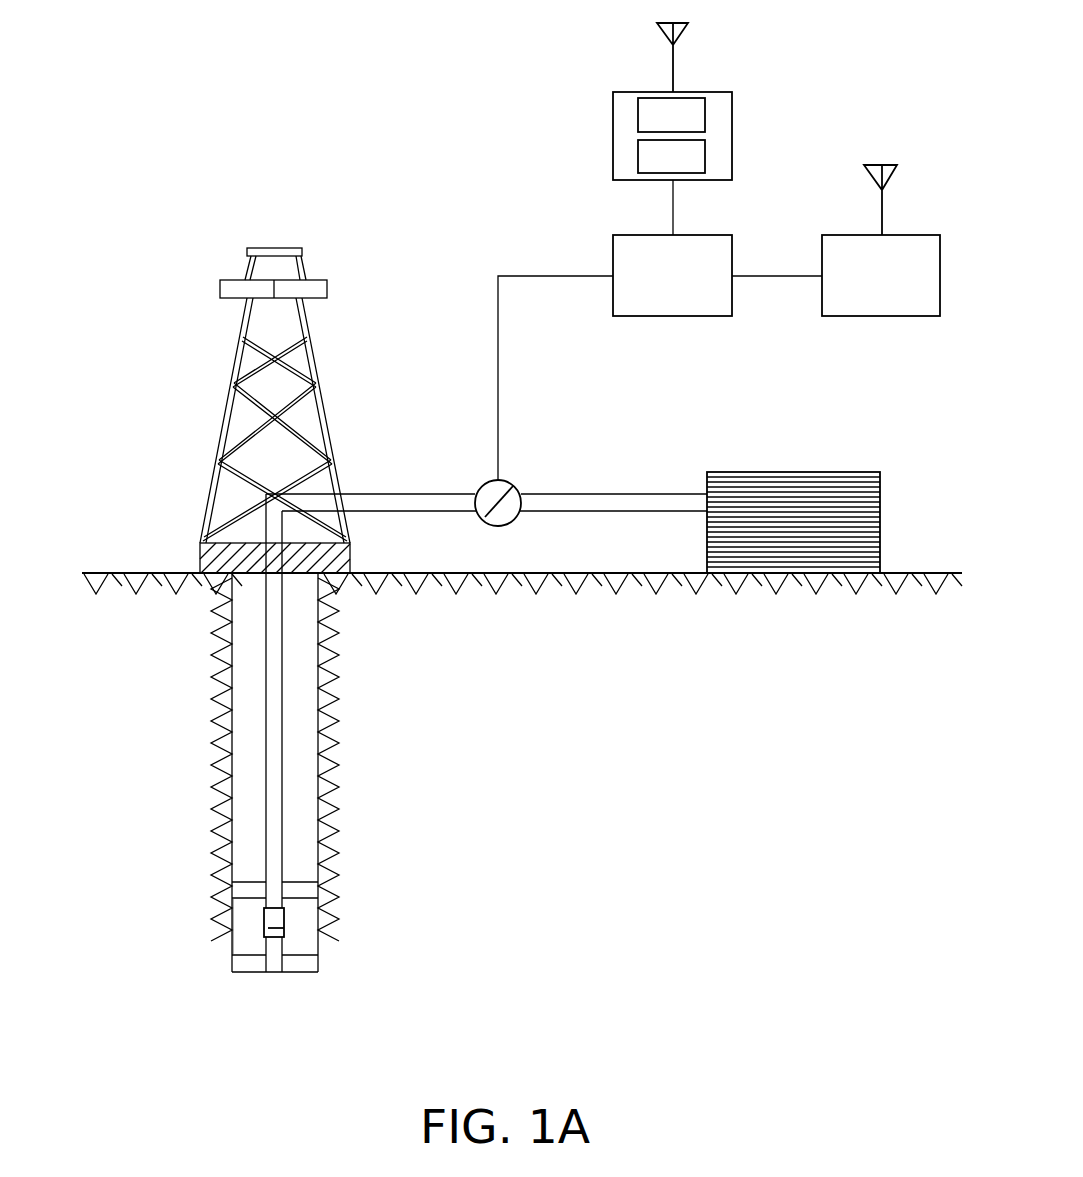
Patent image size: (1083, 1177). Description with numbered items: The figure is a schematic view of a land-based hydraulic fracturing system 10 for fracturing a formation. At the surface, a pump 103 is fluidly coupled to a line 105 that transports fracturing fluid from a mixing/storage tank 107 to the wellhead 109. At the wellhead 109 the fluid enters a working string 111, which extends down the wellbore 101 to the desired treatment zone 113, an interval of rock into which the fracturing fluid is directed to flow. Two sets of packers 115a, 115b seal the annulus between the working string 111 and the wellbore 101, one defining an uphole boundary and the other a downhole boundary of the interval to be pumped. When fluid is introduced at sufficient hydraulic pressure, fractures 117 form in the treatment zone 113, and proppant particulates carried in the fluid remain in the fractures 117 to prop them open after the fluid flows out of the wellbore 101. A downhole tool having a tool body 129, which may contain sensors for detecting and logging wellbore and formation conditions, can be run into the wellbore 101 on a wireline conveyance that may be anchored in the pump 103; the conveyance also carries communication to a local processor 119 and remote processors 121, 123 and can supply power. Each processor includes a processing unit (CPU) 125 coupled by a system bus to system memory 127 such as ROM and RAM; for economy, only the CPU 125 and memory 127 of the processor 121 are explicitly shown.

The hydraulic fracturing system 10 is at (152, 241).
The wellbore 101 is at (230, 685).
The pump 103 is at (507, 482).
The line 105 is at (387, 493).
The mixing/storage tank 107 is at (870, 497).
The wellhead 109 is at (200, 560).
The working string 111 is at (283, 647).
The treatment zone 113 is at (243, 928).
The packer 115a is at (243, 888).
The packer 115b is at (230, 963).
The fractures 117 is at (302, 925).
The local processor 119 is at (698, 300).
The remote processor 121 is at (623, 120).
The remote processor 123 is at (902, 305).
The processing unit (CPU) 125 is at (705, 112).
The system memory 127 is at (705, 148).
The tool body 129 is at (285, 927).